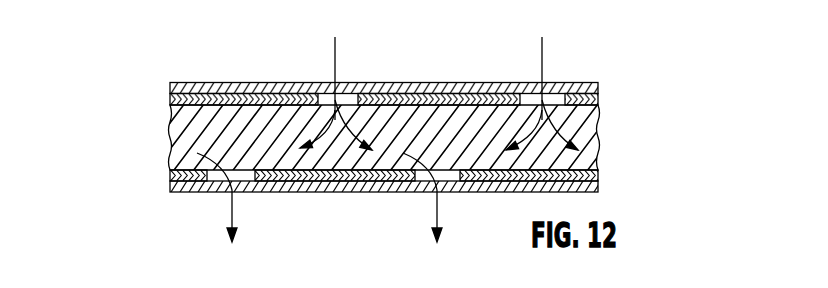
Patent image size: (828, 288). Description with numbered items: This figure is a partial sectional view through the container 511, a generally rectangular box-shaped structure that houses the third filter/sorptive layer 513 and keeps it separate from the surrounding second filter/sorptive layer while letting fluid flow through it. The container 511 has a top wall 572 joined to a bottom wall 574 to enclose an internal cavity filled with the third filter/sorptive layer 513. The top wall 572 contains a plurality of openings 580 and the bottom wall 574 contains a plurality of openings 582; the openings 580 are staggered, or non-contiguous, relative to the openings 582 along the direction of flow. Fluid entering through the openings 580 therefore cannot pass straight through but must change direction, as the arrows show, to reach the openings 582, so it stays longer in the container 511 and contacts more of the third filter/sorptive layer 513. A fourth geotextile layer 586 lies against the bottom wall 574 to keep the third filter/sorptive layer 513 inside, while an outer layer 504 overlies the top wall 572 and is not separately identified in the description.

The top encapsulation layer 504 is at (443, 82).
The top wall 572 is at (170, 97).
The third filter/sorptive layer 513 is at (585, 128).
The bottom wall 574 is at (170, 178).
The fourth geotextile layer 586 is at (578, 191).
The openings 580 is at (347, 97).
The openings 582 is at (215, 178).
The container 511 is at (647, 53).